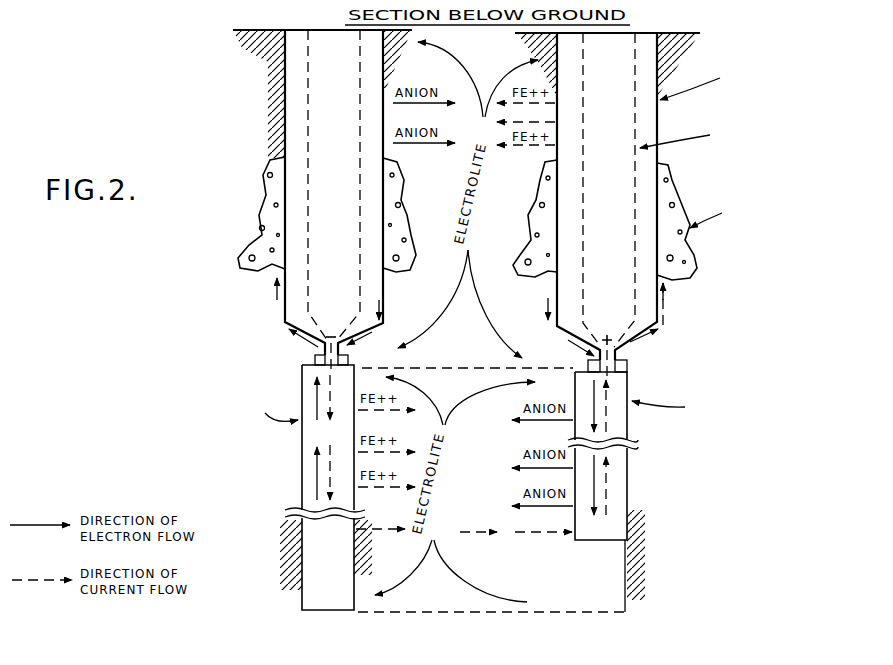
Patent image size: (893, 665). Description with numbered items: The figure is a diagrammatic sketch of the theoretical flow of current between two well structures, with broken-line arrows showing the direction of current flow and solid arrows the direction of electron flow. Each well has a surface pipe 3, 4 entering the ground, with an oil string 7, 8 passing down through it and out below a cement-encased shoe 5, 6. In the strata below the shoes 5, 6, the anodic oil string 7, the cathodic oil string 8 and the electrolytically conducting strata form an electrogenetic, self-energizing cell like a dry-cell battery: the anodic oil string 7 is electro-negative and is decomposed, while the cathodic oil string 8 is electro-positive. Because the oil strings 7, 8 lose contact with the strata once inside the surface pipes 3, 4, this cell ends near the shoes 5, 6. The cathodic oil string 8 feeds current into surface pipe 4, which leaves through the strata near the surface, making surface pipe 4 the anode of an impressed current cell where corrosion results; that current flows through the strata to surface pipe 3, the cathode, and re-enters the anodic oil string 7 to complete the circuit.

The surface pipe 3 is at (283, 140).
The surface pipe 4 is at (660, 120).
The shoe 5 is at (258, 222).
The shoe 6 is at (700, 262).
The anodic oil string 7 is at (298, 498).
The cathodic oil string 8 is at (632, 502).